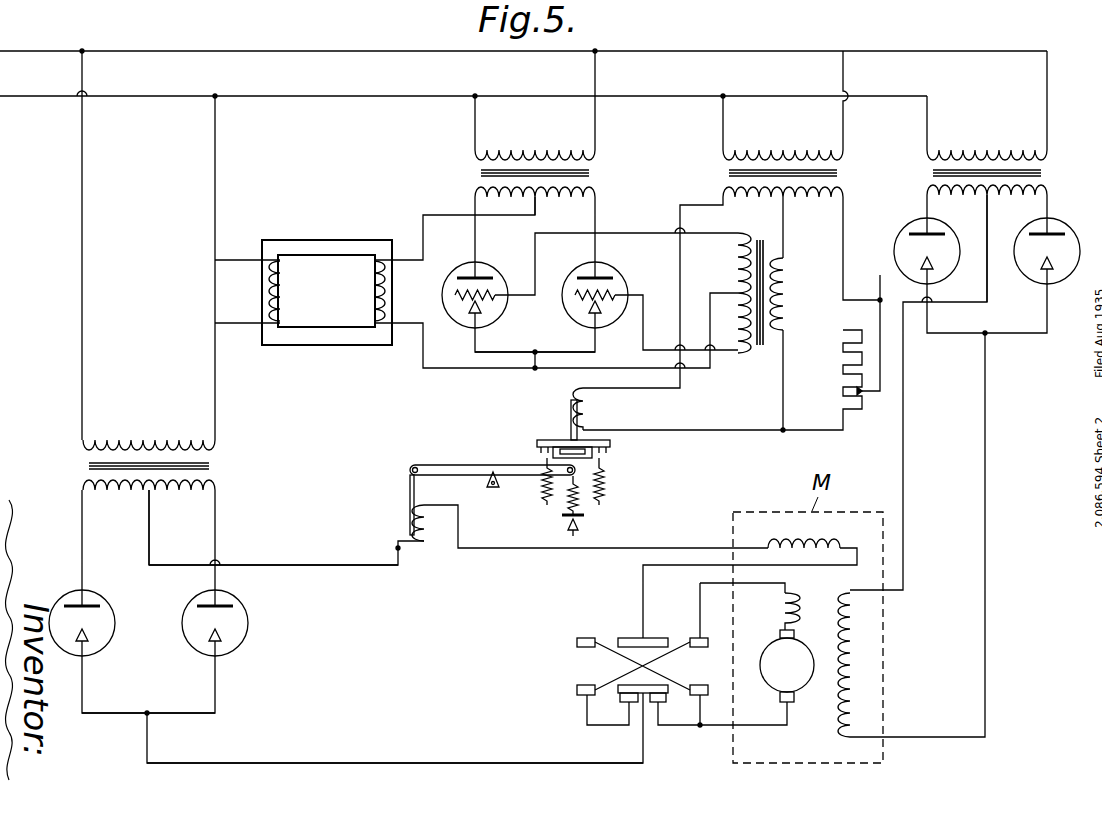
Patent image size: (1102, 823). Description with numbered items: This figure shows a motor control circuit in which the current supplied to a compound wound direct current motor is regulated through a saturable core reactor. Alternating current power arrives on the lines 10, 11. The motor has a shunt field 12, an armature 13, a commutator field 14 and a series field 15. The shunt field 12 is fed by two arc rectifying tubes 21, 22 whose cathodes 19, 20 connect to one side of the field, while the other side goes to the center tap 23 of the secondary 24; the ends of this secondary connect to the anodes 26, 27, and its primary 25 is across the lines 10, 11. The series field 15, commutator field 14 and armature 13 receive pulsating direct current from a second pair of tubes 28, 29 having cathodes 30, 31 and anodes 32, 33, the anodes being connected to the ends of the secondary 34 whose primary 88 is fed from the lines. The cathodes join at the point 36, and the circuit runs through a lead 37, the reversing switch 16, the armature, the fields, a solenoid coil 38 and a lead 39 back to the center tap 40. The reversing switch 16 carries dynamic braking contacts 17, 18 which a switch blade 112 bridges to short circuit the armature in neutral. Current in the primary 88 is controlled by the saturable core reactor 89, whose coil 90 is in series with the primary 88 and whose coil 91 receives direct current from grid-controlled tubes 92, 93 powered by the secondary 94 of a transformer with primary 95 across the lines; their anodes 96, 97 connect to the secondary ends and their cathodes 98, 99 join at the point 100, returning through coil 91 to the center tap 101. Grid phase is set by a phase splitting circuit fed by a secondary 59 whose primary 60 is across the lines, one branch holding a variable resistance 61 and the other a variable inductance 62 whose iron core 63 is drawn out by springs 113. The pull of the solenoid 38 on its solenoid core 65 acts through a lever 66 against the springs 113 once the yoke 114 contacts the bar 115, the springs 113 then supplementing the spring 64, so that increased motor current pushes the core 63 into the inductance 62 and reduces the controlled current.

The alternating current line 10 is at (28, 58).
The alternating current line 11 is at (43, 99).
The shunt field 12 is at (856, 657).
The armature 13 is at (775, 670).
The commutator field 14 is at (798, 594).
The series field 15 is at (830, 540).
The reversing switch 16 is at (632, 636).
The contact 17 is at (621, 701).
The contact 18 is at (662, 701).
The cathode 19 is at (933, 270).
The cathode 20 is at (1047, 273).
The arc rectifying tube 21 is at (896, 248).
The arc rectifying tube 22 is at (1015, 249).
The center tap 23 is at (988, 196).
The secondary 24 is at (975, 188).
The primary 25 is at (988, 151).
The anode 26 is at (920, 234).
The anode 27 is at (1050, 236).
The arc rectifying tube 28 is at (113, 617).
The arc rectifying tube 29 is at (250, 618).
The cathode 30 is at (86, 641).
The cathode 31 is at (223, 640).
The anode 32 is at (93, 607).
The anode 33 is at (228, 606).
The secondary 34 is at (188, 492).
The point 36 is at (149, 713).
The lead 37 is at (398, 762).
The solenoid coil 38 is at (418, 546).
The lead 39 is at (311, 565).
The center tap 40 is at (147, 491).
The secondary 59 is at (810, 194).
The primary 60 is at (779, 152).
The variable resistance 61 is at (842, 369).
The variable inductance 62 is at (583, 409).
The iron core 63 is at (580, 425).
The spring 64 is at (580, 503).
The solenoid core 65 is at (409, 495).
The lever 66 is at (483, 464).
The primary 88 is at (139, 442).
The saturable core reactor 89 is at (327, 241).
The coil 90 is at (283, 292).
The coil 91 is at (397, 297).
The grid-controlled arc rectifying tube 92 is at (492, 268).
The grid-controlled arc rectifying tube 93 is at (625, 278).
The secondary 94 is at (560, 198).
The primary 95 is at (541, 152).
The anode 96 is at (470, 268).
The anode 97 is at (591, 268).
The cathode 98 is at (475, 318).
The cathode 99 is at (602, 317).
The point 100 is at (538, 340).
The center tap 101 is at (534, 190).
The switch blade 112 is at (650, 688).
The spring 113 is at (543, 493).
The yoke 114 is at (592, 458).
The bar 115 is at (543, 439).